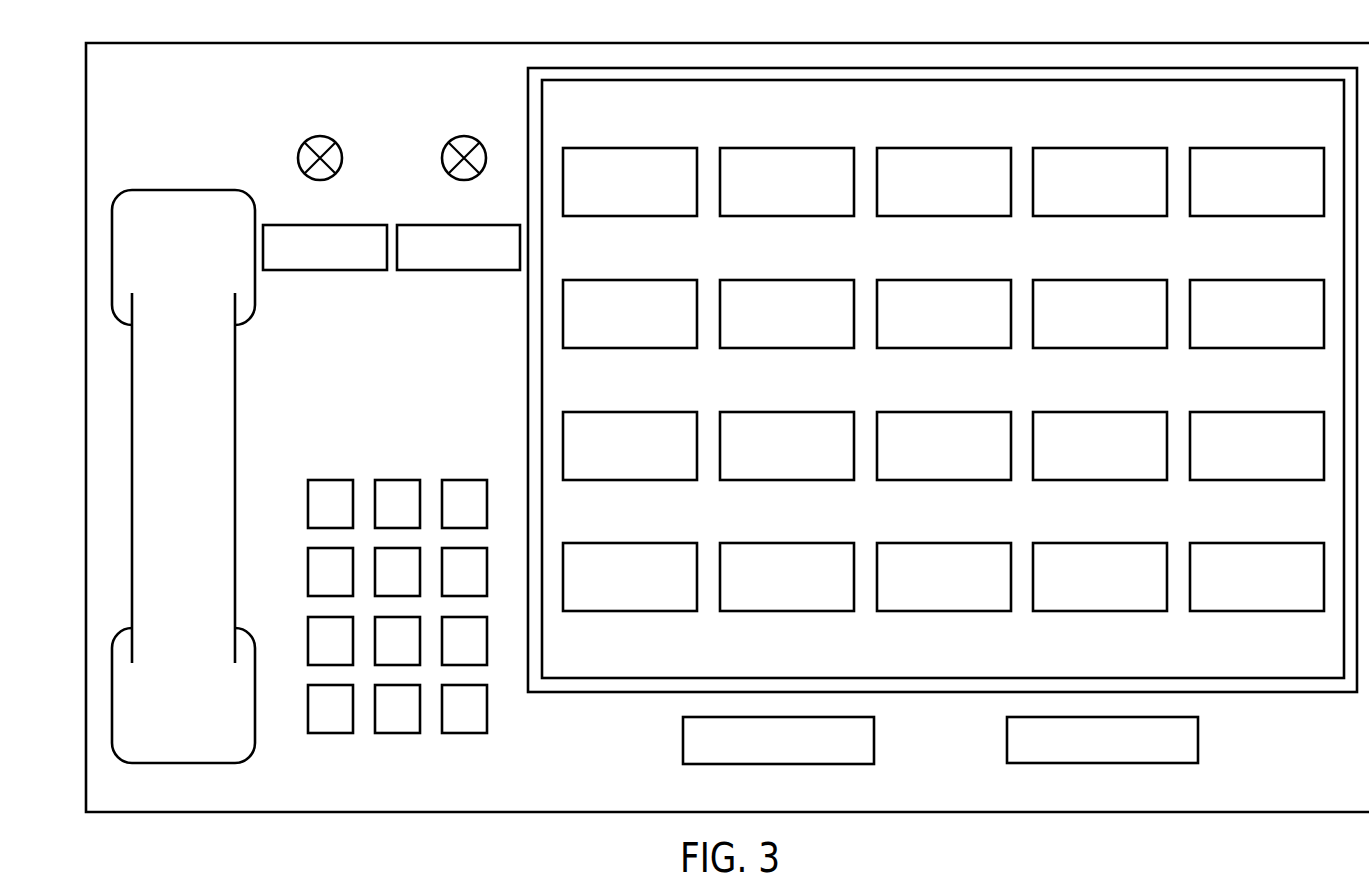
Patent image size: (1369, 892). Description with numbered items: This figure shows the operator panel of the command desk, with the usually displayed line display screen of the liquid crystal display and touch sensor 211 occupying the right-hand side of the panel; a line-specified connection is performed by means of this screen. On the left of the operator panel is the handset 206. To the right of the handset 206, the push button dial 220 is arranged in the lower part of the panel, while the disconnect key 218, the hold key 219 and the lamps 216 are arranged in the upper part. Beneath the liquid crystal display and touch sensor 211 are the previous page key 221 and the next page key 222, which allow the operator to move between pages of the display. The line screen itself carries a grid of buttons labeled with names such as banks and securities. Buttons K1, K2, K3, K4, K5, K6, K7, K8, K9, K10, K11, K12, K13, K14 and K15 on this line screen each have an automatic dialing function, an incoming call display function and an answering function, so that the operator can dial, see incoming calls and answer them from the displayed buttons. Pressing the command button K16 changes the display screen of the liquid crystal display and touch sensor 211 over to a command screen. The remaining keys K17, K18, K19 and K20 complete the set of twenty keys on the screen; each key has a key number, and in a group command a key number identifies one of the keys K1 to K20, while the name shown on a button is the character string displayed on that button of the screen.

The handset 206 is at (235, 370).
The liquid crystal display and touch sensor 211 is at (528, 370).
The lamps 216 is at (448, 141).
The disconnect key 218 is at (327, 271).
The hold key 219 is at (458, 271).
The push button dial 220 is at (397, 480).
The previous page key 221 is at (683, 740).
The next page key 222 is at (1007, 740).
The button K1 is at (633, 148).
The button K2 is at (790, 148).
The button K3 is at (947, 148).
The button K4 is at (1103, 148).
The button K5 is at (1260, 148).
The button K6 is at (633, 280).
The button K7 is at (790, 280).
The button K8 is at (947, 280).
The button K9 is at (1103, 280).
The button K10 is at (1260, 280).
The button K11 is at (633, 412).
The button K12 is at (790, 412).
The button K13 is at (947, 412).
The button K14 is at (1103, 412).
The button K15 is at (1260, 412).
The command button K16 is at (633, 543).
The key K17 is at (790, 543).
The key K18 is at (947, 543).
The key K19 is at (1103, 543).
The key K20 is at (1260, 543).